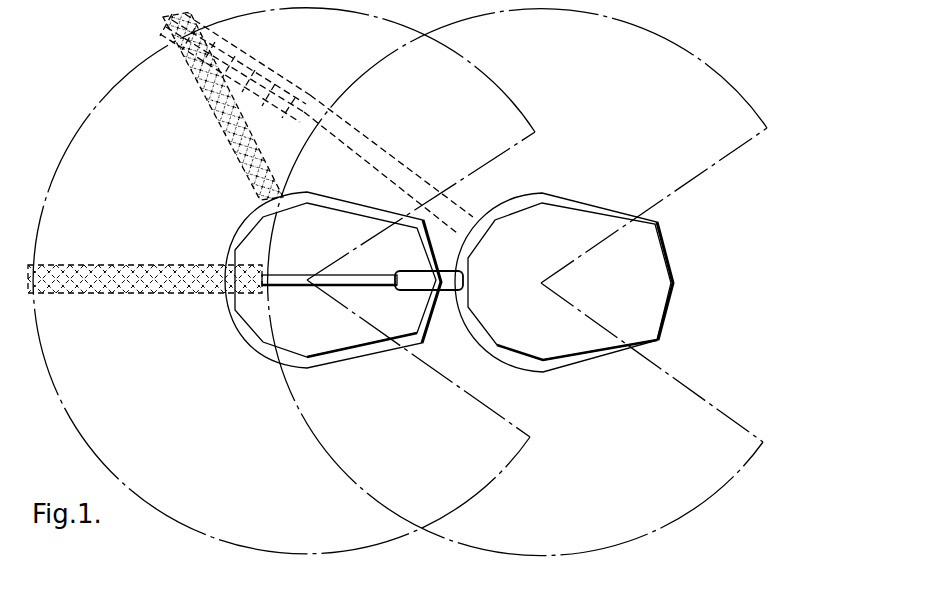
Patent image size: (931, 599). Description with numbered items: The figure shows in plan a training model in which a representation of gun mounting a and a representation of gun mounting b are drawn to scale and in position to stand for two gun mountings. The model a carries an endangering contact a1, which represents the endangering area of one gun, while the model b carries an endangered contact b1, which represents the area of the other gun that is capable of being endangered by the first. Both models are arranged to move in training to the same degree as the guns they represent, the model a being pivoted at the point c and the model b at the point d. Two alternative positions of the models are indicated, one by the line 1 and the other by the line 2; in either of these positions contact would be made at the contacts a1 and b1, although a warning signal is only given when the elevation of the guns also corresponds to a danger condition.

The representation of gun mounting a is at (590, 213).
The representation of gun mounting b is at (228, 256).
The pivot point c is at (557, 278).
The pivot point d is at (312, 278).
The model position 1 is at (380, 283).
The model position 2 is at (362, 150).
The endangering contact a1 is at (262, 68).
The endangered contact b1 is at (120, 266).